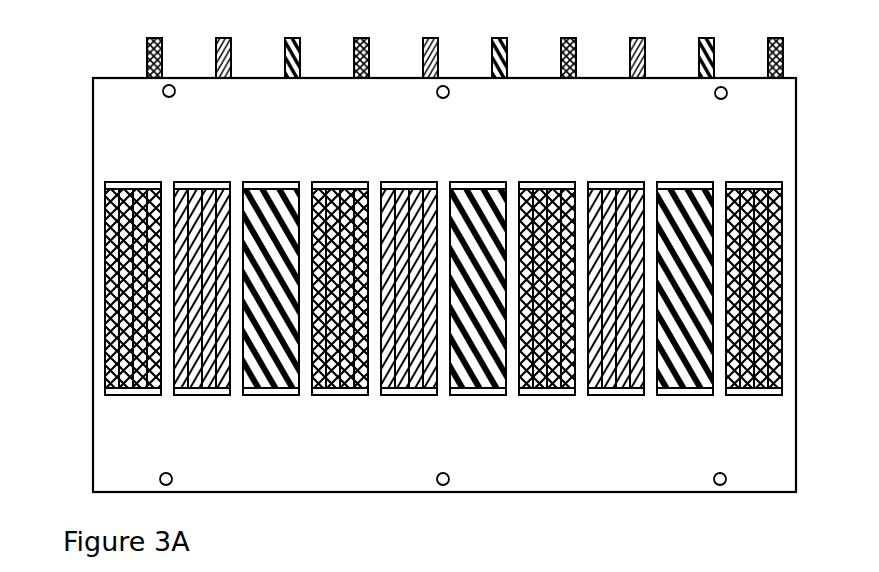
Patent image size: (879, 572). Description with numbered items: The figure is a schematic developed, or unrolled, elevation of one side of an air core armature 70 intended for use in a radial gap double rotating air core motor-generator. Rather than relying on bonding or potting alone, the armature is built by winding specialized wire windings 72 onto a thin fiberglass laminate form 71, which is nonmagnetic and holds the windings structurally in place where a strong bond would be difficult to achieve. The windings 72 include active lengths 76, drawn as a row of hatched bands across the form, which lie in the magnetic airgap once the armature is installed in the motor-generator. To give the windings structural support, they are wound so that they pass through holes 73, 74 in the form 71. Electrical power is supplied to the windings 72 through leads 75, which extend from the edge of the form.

The air core armature 70 is at (68, 48).
The thin fiberglass laminate form 71 is at (797, 133).
The wire windings 72 is at (783, 282).
The hole 73 is at (696, 397).
The hole 74 is at (690, 187).
The leads 75 is at (646, 50).
The active lengths 76 is at (78, 392).